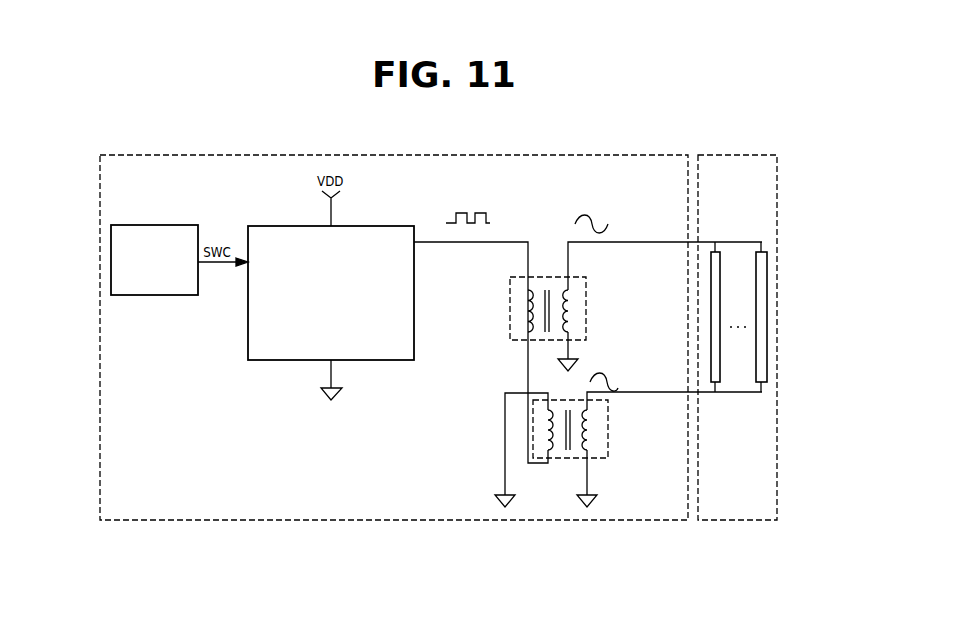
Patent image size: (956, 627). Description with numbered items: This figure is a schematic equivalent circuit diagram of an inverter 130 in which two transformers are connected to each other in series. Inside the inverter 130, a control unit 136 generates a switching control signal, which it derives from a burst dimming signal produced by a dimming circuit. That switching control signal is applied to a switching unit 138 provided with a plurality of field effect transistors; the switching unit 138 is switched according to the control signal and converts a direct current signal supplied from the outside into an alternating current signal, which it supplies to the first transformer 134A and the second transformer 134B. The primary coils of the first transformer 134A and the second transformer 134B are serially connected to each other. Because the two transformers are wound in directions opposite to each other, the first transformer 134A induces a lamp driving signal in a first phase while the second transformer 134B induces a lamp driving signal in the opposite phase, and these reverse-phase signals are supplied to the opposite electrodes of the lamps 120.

The lamps 120 is at (733, 155).
The inverter 130 is at (601, 155).
The first transformer 134A is at (586, 308).
The second transformer 134B is at (608, 430).
The control unit 136 is at (142, 271).
The switching unit 138 is at (319, 295).